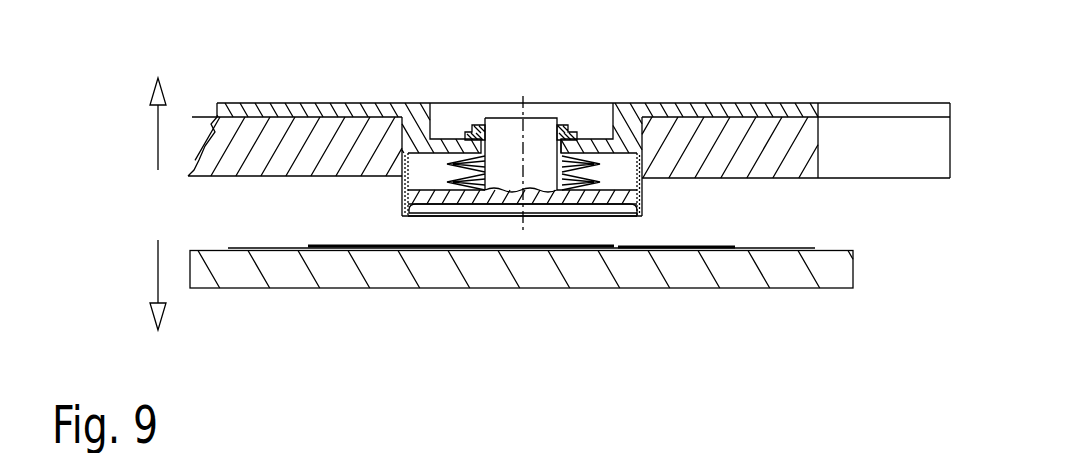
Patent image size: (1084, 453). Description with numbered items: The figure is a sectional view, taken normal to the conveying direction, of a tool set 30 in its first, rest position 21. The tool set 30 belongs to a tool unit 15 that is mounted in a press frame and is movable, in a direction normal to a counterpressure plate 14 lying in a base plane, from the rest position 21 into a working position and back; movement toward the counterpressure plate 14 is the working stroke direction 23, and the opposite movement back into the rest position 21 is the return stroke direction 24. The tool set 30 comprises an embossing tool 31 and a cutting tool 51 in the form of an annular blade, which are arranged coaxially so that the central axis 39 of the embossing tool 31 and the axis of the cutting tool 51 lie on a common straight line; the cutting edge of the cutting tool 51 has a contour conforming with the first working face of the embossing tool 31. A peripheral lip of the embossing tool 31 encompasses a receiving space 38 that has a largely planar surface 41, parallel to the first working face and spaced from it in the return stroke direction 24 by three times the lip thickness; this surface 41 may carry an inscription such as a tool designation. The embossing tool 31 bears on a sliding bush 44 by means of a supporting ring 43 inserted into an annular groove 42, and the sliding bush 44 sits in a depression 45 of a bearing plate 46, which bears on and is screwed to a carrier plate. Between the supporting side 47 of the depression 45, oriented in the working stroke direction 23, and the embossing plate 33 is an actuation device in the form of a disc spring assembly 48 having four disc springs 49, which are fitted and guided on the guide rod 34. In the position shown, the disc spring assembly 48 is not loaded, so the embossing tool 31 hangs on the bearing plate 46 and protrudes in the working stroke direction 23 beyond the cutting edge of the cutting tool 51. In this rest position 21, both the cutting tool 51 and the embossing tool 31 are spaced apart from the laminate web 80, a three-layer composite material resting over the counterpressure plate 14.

The counterpressure plate 14 is at (557, 280).
The tool unit 15 is at (672, 95).
The rest position 21 is at (372, 207).
The working stroke direction 23 is at (158, 285).
The return stroke direction 24 is at (158, 122).
The tool set 30 is at (648, 240).
The embossing tool 31 is at (533, 100).
The embossing plate 33 is at (435, 198).
The guide rod 34 is at (500, 123).
The receiving space 38 is at (488, 228).
The central axis 39 is at (518, 98).
The surface 41 is at (442, 205).
The annular groove 42 is at (432, 115).
The supporting ring 43 is at (563, 126).
The sliding bush 44 is at (580, 133).
The depression 45 is at (472, 131).
The bearing plate 46 is at (243, 110).
The supporting side 47 is at (401, 197).
The disc spring assembly 48 is at (470, 188).
The disc spring 49 is at (662, 112).
The cutting tool 51 is at (641, 196).
The laminate web 80 is at (615, 251).